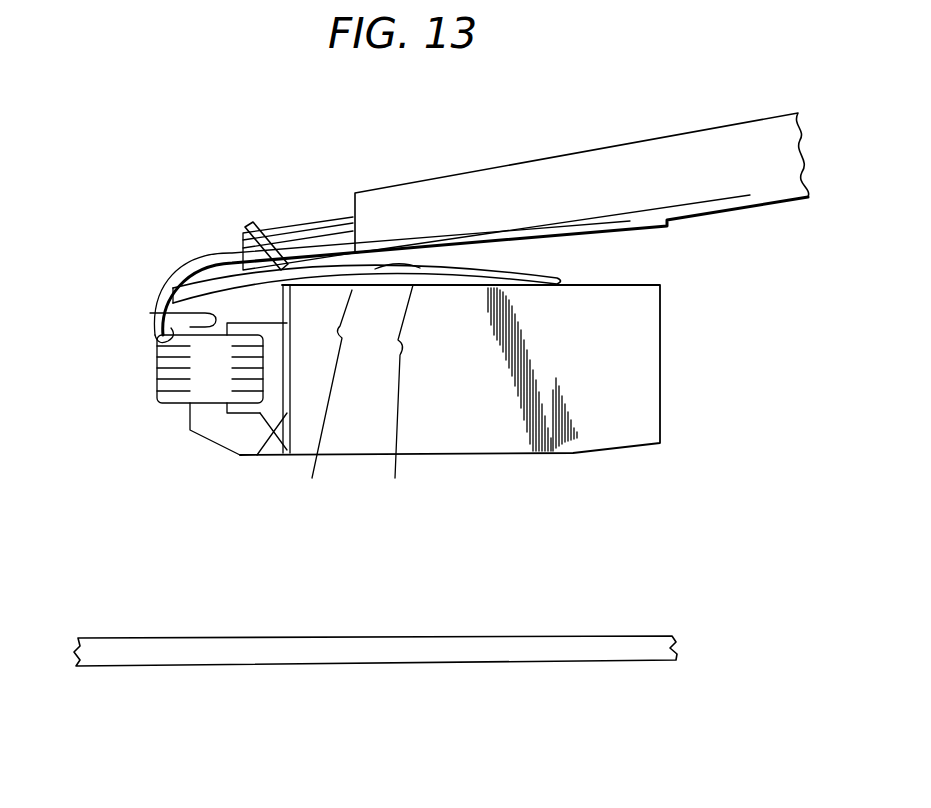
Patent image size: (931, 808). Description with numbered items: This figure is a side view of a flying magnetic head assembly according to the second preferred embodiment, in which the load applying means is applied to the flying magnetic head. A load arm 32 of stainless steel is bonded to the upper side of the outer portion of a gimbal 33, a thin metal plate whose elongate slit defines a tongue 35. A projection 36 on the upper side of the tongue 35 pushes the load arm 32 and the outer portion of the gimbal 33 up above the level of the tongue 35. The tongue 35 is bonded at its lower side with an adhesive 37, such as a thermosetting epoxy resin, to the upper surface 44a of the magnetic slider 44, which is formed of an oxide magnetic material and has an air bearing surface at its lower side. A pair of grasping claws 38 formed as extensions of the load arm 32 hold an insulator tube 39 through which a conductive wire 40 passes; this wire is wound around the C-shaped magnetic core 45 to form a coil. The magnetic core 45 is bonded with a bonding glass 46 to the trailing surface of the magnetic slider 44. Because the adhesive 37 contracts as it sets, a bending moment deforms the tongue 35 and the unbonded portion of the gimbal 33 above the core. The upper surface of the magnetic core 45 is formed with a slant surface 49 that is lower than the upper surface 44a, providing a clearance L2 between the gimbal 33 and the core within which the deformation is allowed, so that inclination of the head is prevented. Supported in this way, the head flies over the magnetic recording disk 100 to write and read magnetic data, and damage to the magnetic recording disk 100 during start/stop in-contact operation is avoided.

The load arm 32 is at (466, 186).
The gimbal 33 is at (622, 222).
The tongue 35 is at (518, 280).
The projection 36 is at (398, 262).
The adhesive 37 is at (404, 403).
The grasping claws 38 is at (257, 220).
The insulator tube 39 is at (298, 228).
The conductive wire 40 is at (205, 252).
The magnetic slider 44 is at (490, 443).
The upper surface of the magnetic slider 44a is at (318, 406).
The magnetic core 45 is at (190, 418).
The bonding glass 46 is at (257, 457).
The slant surface 49 is at (160, 327).
The clearance L2 is at (150, 313).
The magnetic recording disk 100 is at (635, 634).